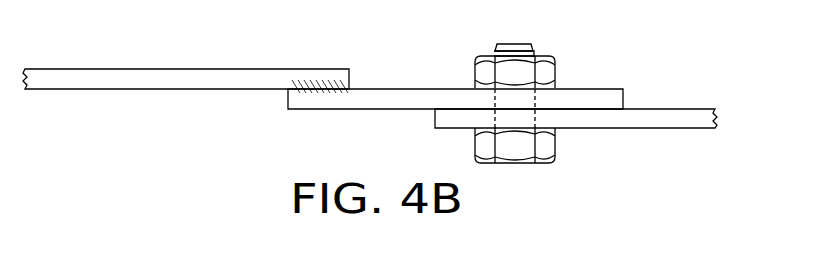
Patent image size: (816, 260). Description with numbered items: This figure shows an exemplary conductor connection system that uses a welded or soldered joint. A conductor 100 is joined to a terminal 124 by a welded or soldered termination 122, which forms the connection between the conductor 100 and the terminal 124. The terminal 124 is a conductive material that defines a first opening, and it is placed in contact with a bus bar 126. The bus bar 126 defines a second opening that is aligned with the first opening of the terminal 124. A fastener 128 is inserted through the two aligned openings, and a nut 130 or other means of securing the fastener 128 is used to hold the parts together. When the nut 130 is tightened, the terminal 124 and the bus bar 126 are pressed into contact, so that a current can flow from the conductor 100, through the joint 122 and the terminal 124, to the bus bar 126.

The conductor 100 is at (167, 69).
The welded or soldered termination 122 is at (288, 90).
The terminal 124 is at (590, 88).
The bus bar 126 is at (610, 129).
The fastener 128 is at (515, 165).
The nut 130 is at (474, 72).